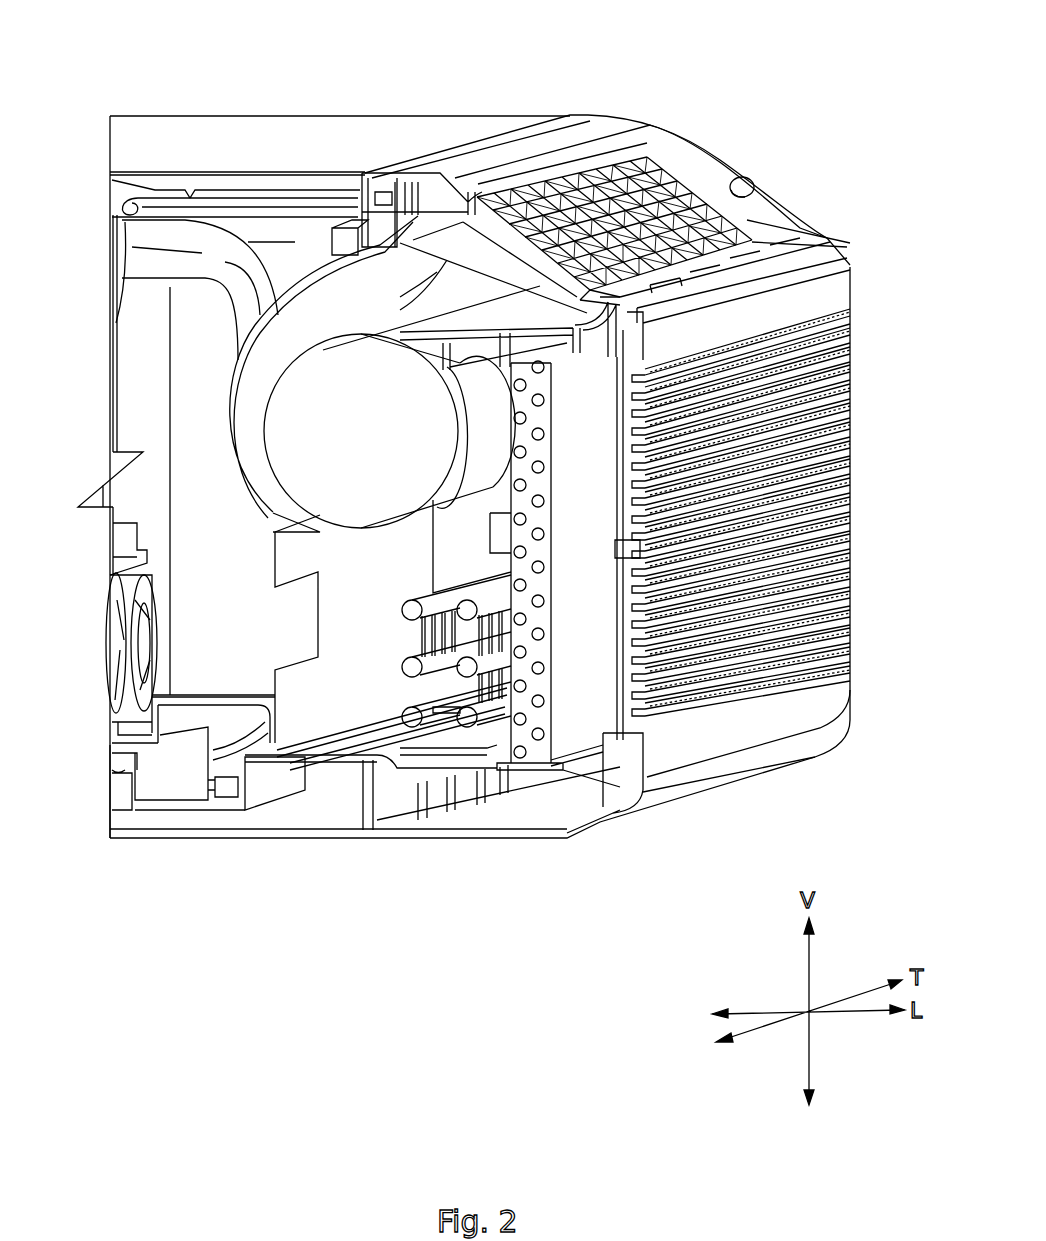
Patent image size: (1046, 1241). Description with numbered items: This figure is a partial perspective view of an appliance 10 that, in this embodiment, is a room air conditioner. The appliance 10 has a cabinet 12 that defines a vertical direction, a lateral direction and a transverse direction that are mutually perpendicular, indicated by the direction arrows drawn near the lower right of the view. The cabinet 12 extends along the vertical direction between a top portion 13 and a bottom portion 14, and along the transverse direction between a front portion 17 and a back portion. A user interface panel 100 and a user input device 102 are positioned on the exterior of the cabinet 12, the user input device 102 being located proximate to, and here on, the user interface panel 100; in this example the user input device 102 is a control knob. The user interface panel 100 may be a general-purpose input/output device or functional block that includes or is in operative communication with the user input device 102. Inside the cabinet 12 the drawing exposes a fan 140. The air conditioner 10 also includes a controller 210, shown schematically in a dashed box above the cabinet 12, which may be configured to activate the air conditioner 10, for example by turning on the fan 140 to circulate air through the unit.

The appliance 10 is at (312, 145).
The cabinet 12 is at (245, 143).
The top portion 13 is at (125, 102).
The bottom portion 14 is at (235, 842).
The front portion 17 is at (862, 700).
The user interface panel 100 is at (776, 220).
The user input device 102 is at (741, 188).
The fan 140 is at (382, 410).
The controller 210 is at (607, 116).